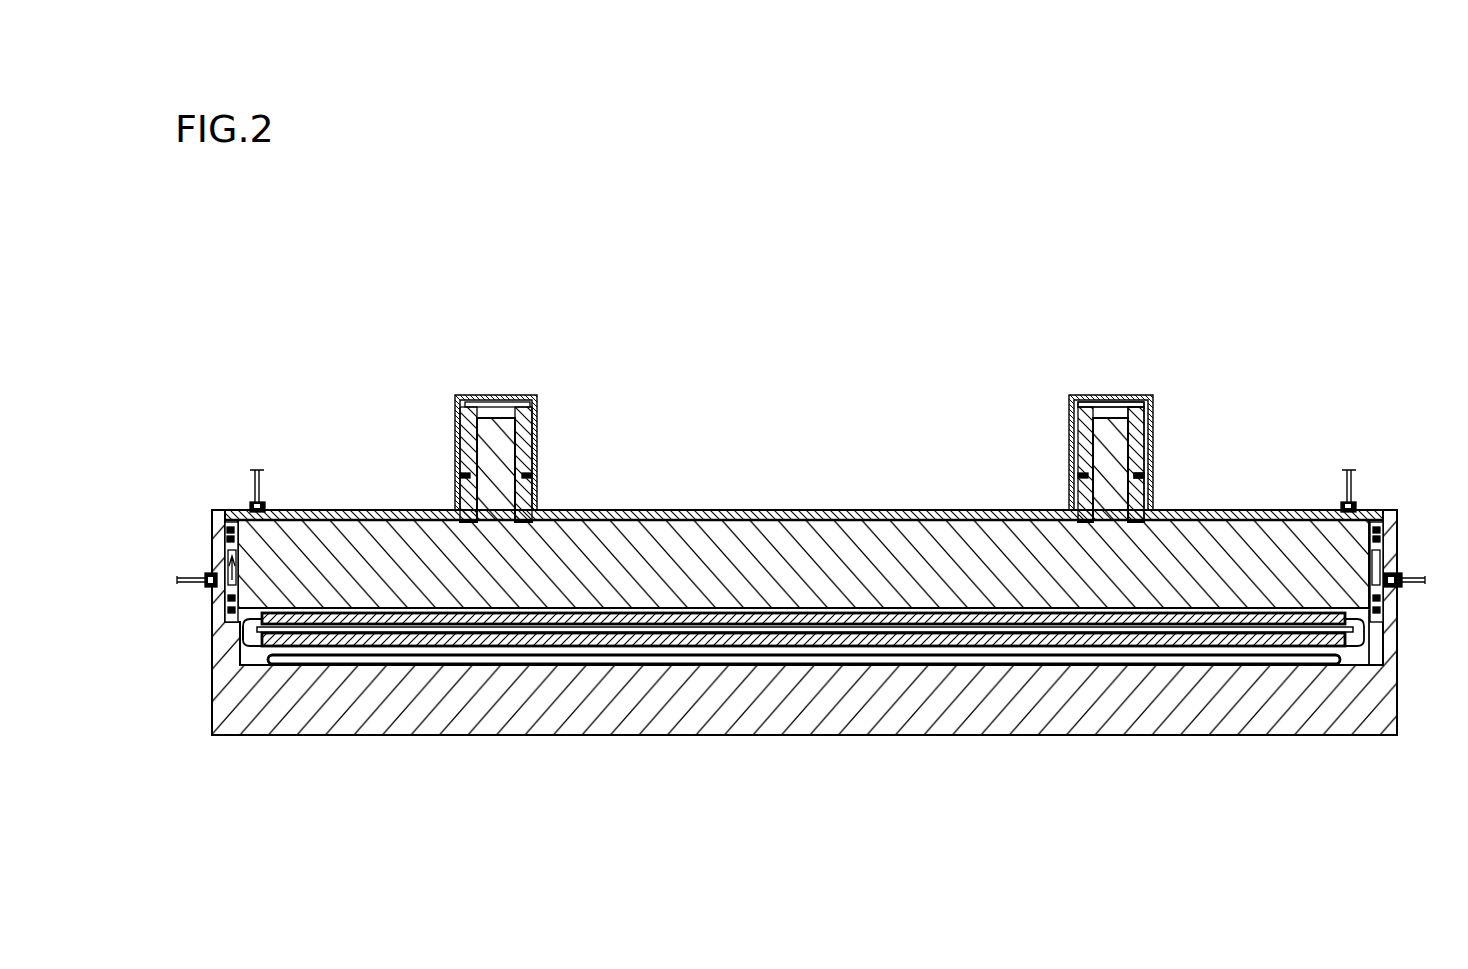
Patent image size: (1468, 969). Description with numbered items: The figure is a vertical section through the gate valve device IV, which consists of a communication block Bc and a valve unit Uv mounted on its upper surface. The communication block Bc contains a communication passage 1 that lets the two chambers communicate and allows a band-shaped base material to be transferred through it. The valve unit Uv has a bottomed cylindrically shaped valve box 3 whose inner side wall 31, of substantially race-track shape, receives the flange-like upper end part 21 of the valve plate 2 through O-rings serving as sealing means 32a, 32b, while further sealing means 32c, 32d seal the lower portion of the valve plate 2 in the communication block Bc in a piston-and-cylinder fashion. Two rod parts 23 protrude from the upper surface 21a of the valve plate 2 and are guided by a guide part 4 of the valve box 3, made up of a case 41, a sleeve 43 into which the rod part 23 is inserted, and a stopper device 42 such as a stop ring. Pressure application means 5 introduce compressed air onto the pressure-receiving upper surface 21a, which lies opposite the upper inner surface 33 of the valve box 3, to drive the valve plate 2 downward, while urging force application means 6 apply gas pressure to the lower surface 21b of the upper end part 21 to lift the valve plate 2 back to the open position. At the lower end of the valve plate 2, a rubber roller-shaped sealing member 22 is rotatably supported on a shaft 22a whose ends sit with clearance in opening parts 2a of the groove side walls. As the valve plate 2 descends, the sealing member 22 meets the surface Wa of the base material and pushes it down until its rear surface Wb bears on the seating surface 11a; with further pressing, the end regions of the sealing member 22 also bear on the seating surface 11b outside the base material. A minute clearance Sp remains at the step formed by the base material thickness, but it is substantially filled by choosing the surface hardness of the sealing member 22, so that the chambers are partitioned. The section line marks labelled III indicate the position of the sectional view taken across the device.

The communication passage 1 is at (318, 705).
The communication block Bc is at (970, 720).
The valve plate 2 is at (577, 560).
The opening parts 2a is at (250, 610).
The valve box 3 is at (322, 510).
The rod parts 23 is at (1105, 438).
The upper inner surface 33 is at (886, 537).
The valve unit Uv is at (652, 507).
The gate valve device IV is at (808, 422).
The guide part 4 is at (513, 395).
The case 41 is at (1150, 406).
The sleeve 43 is at (1150, 437).
The stopper device 42 is at (1150, 477).
The pressure application means 5 is at (257, 468).
The urging force application means 6 is at (173, 579).
The upper end part 21 is at (232, 527).
The upper surface 21a is at (402, 515).
The lower surface 21b is at (227, 598).
The sealing means 32a is at (227, 527).
The sealing means 32b is at (227, 540).
The sealing means 32c is at (228, 612).
The sealing means 32d is at (232, 630).
The inner side wall 31 is at (1357, 550).
The surface of the base material Wa is at (427, 622).
The rear surface of the base material Wb is at (503, 642).
The sealing member 22 is at (262, 640).
The shaft 22a is at (256, 648).
The seating surface 11a is at (562, 660).
The seating surface 11b is at (1372, 668).
The minute clearance Sp is at (270, 658).
The section line III is at (1112, 370).